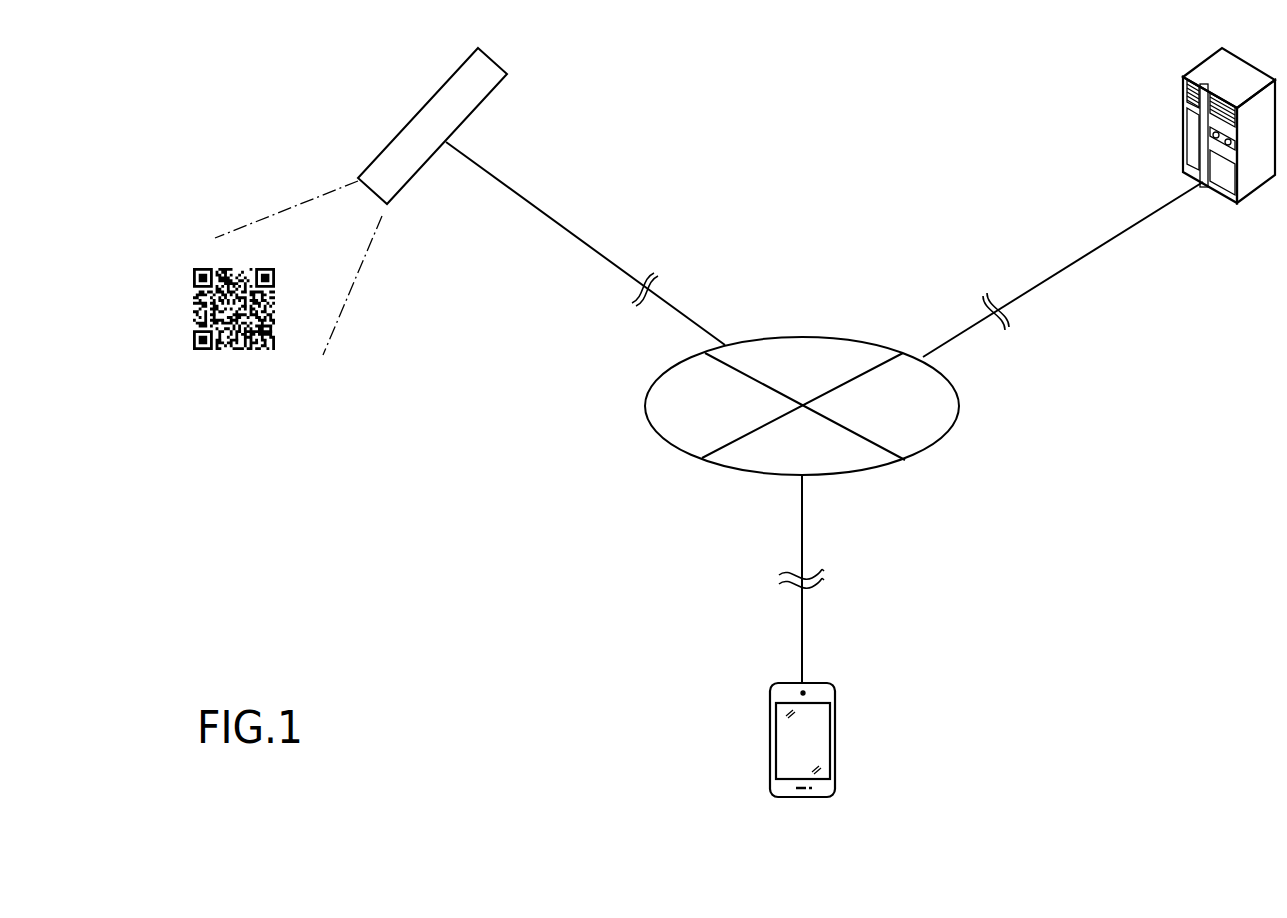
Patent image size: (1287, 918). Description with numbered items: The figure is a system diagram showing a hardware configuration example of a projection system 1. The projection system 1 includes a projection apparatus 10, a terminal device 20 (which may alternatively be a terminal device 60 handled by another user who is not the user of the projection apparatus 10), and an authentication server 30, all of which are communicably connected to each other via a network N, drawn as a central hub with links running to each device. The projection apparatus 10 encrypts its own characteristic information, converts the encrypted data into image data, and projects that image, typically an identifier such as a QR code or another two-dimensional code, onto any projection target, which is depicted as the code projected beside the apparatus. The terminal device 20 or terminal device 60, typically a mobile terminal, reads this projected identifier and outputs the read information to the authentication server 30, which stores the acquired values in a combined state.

The projection system 1 is at (862, 251).
The projection apparatus 10 is at (470, 98).
The network N is at (805, 336).
The authentication server 30 is at (1190, 133).
The terminal device 20 is at (830, 743).
The terminal device 60 is at (802, 740).